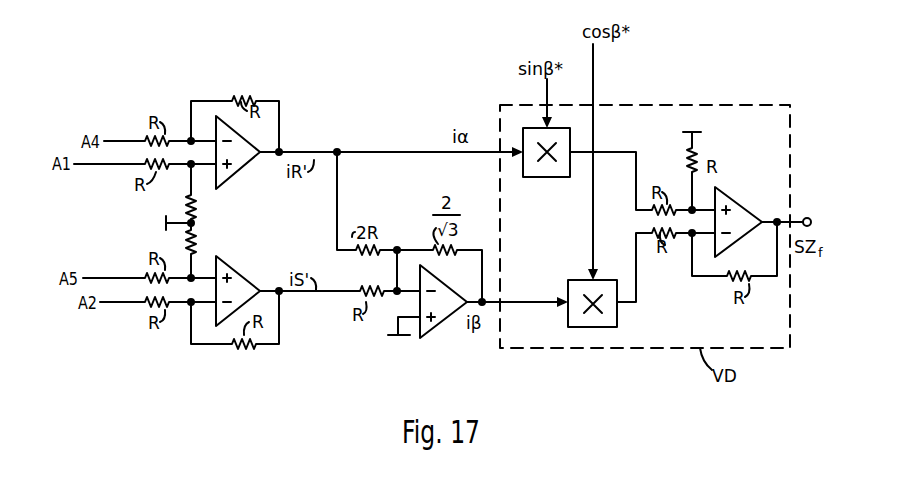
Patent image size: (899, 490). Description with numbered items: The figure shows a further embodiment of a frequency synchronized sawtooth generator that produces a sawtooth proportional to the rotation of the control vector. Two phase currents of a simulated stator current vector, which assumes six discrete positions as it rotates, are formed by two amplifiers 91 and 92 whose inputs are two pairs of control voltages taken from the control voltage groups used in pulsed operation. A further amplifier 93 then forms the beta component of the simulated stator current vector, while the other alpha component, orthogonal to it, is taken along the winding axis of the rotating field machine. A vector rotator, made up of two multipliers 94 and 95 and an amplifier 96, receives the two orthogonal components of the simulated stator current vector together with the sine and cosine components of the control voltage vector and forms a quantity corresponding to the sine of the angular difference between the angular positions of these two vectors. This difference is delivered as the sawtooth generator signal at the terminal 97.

The amplifier 91 is at (229, 168).
The amplifier 92 is at (230, 269).
The amplifier 93 is at (438, 327).
The multiplier 94 is at (553, 178).
The multiplier 95 is at (578, 279).
The amplifier 96 is at (736, 203).
The terminal 97 is at (810, 211).